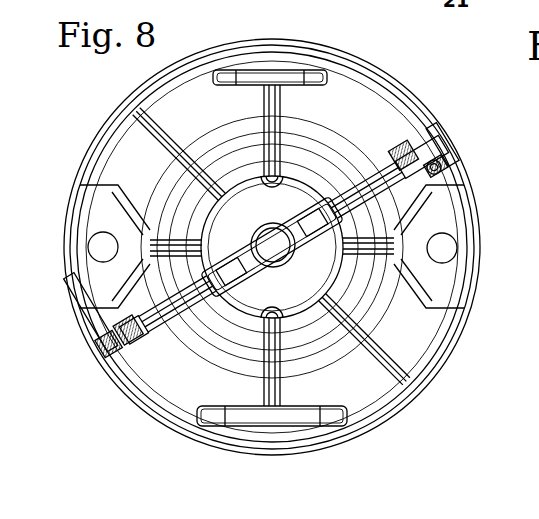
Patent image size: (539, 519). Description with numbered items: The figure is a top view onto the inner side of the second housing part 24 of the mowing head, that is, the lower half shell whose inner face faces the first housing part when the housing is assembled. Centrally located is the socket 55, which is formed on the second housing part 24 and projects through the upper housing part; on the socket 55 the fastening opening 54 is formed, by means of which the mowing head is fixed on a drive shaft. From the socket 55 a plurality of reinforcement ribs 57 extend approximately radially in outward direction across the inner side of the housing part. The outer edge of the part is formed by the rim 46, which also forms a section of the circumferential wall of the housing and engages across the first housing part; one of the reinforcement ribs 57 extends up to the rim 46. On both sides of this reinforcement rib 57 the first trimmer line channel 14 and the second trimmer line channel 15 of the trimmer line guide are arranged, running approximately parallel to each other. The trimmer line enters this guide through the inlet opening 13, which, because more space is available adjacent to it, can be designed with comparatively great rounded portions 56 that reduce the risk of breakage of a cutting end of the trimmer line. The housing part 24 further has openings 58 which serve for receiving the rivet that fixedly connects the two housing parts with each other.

The inlet opening 13 is at (453, 153).
The first trimmer line channel 14 is at (436, 170).
The second trimmer line channel 15 is at (408, 152).
The second housing part 24 is at (164, 447).
The rim 46 is at (301, 48).
The fastening opening 54 is at (275, 242).
The socket 55 is at (242, 198).
The rounded portions 56 is at (440, 143).
The reinforcement ribs 57 is at (387, 180).
The openings 58 is at (100, 243).